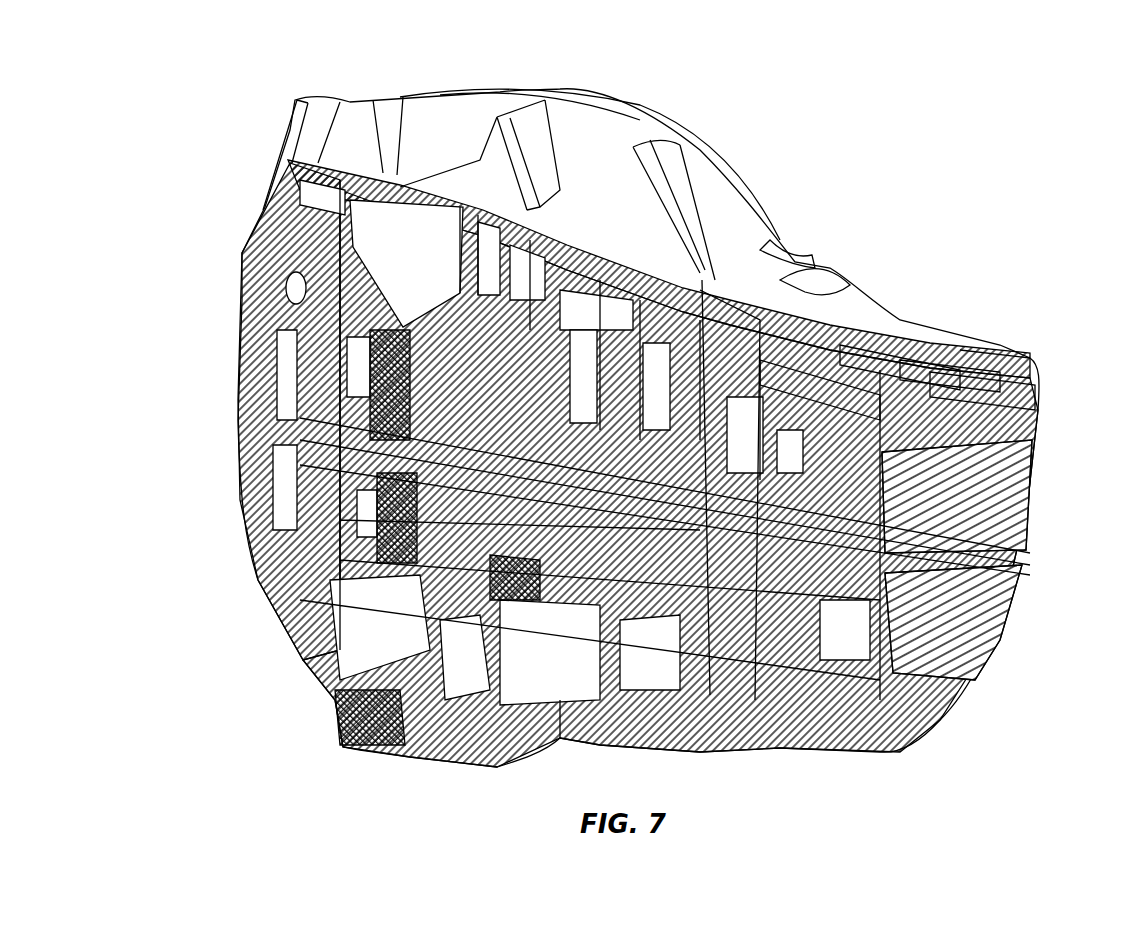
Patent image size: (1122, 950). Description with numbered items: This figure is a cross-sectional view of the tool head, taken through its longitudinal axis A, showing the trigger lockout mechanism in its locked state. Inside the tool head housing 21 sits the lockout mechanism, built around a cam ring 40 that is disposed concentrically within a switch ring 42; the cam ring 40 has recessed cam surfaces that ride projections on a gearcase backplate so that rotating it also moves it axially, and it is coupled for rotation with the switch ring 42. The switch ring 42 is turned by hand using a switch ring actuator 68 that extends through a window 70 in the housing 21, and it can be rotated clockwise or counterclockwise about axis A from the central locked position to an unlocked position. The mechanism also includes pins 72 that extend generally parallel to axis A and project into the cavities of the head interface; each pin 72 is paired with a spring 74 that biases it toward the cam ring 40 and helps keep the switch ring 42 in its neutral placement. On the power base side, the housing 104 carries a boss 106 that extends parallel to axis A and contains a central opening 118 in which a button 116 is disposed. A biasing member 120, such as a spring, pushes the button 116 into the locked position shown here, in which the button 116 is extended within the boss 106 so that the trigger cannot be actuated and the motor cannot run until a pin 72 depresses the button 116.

The housing 21 is at (703, 177).
The cam ring 40 is at (710, 695).
The switch ring 42 is at (755, 700).
The switch ring actuator 68 is at (813, 283).
The window 70 is at (783, 250).
The pins 72 is at (890, 740).
The springs 74 is at (783, 710).
The housing 104 is at (963, 363).
The boss 106 is at (1000, 355).
The button 116 is at (930, 373).
The central opening 118 is at (1017, 487).
The biasing member 120 is at (960, 640).
The axis A is at (990, 568).